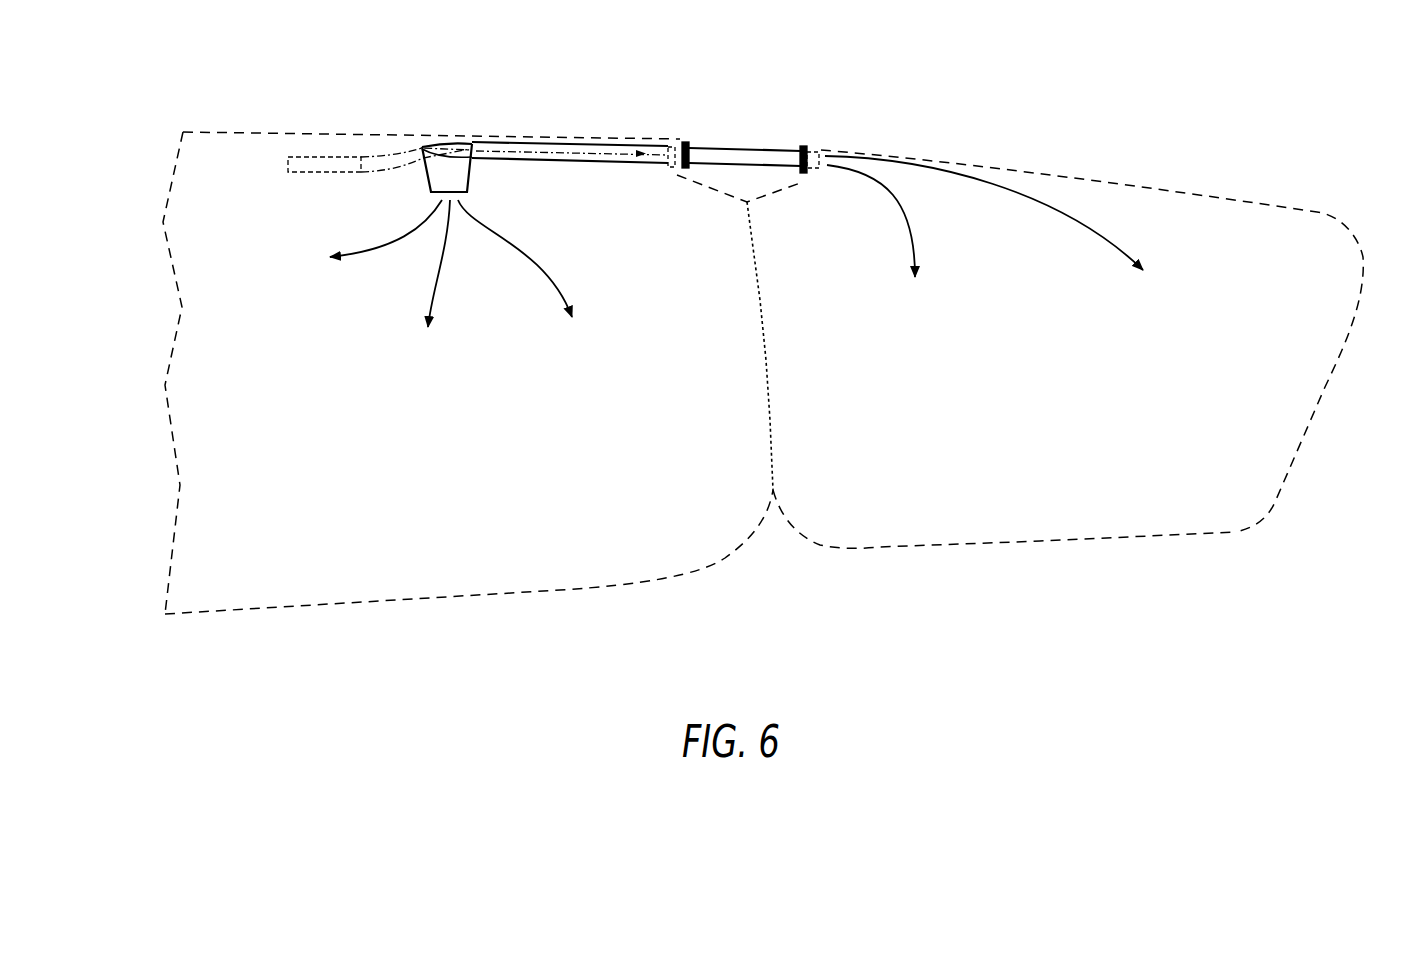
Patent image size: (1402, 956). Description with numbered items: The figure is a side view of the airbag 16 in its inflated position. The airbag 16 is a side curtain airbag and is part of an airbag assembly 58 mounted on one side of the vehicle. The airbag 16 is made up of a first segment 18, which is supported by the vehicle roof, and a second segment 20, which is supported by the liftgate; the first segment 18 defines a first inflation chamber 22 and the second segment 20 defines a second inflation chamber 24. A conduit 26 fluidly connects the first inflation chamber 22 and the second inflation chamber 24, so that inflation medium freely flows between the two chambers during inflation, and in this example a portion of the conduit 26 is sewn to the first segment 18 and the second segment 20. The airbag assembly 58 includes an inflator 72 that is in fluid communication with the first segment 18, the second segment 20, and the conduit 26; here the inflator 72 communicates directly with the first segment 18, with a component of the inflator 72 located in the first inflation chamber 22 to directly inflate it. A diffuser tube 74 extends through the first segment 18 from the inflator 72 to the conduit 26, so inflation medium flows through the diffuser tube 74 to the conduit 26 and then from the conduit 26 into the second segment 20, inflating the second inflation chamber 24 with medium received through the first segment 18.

The airbag 16 is at (500, 623).
The first segment 18 is at (312, 611).
The second segment 20 is at (1005, 542).
The first inflation chamber 22 is at (245, 487).
The second inflation chamber 24 is at (1122, 488).
The conduit 26 is at (742, 130).
The airbag assembly 58 is at (587, 113).
The inflator 72 is at (328, 157).
The diffuser tube 74 is at (587, 161).